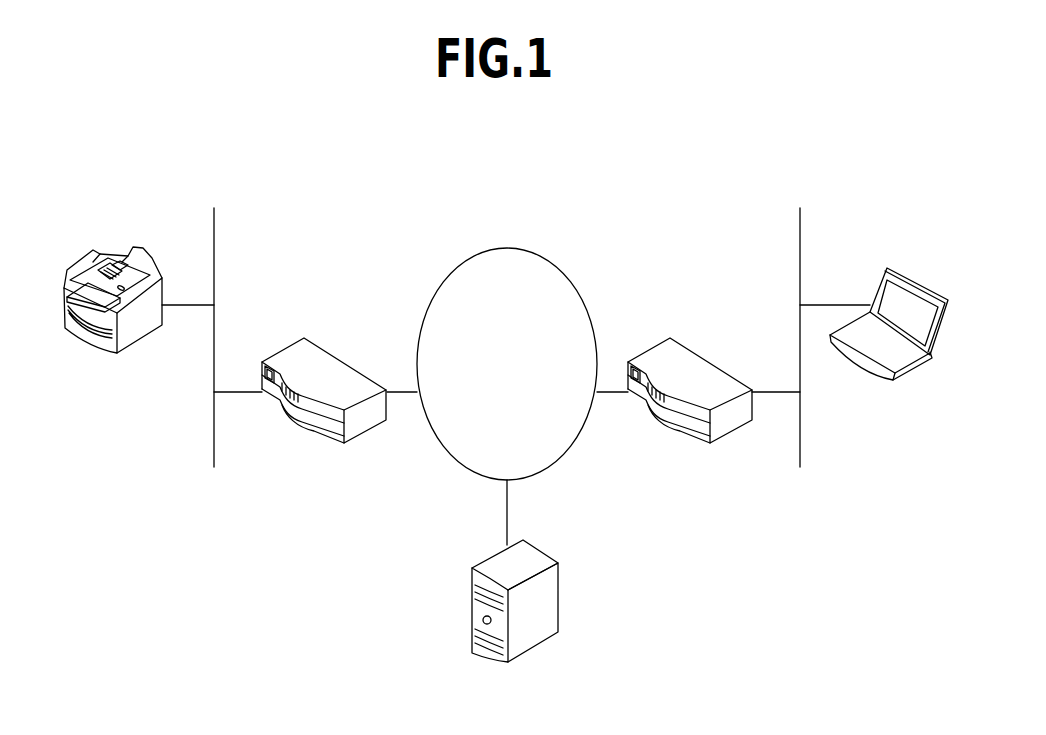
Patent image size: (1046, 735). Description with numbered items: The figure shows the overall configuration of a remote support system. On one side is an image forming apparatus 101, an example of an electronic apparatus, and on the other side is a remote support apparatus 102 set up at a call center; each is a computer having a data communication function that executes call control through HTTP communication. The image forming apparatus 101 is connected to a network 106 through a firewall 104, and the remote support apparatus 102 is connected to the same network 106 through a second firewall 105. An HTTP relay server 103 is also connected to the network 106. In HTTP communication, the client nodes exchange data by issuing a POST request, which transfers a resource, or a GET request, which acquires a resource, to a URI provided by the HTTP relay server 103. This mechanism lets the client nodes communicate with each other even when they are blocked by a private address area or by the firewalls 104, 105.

The image forming apparatus 101 is at (90, 350).
The remote support apparatus 102 is at (867, 371).
The HTTP relay server 103 is at (559, 597).
The firewall 104 is at (295, 433).
The firewall 105 is at (662, 433).
The network 106 is at (507, 245).